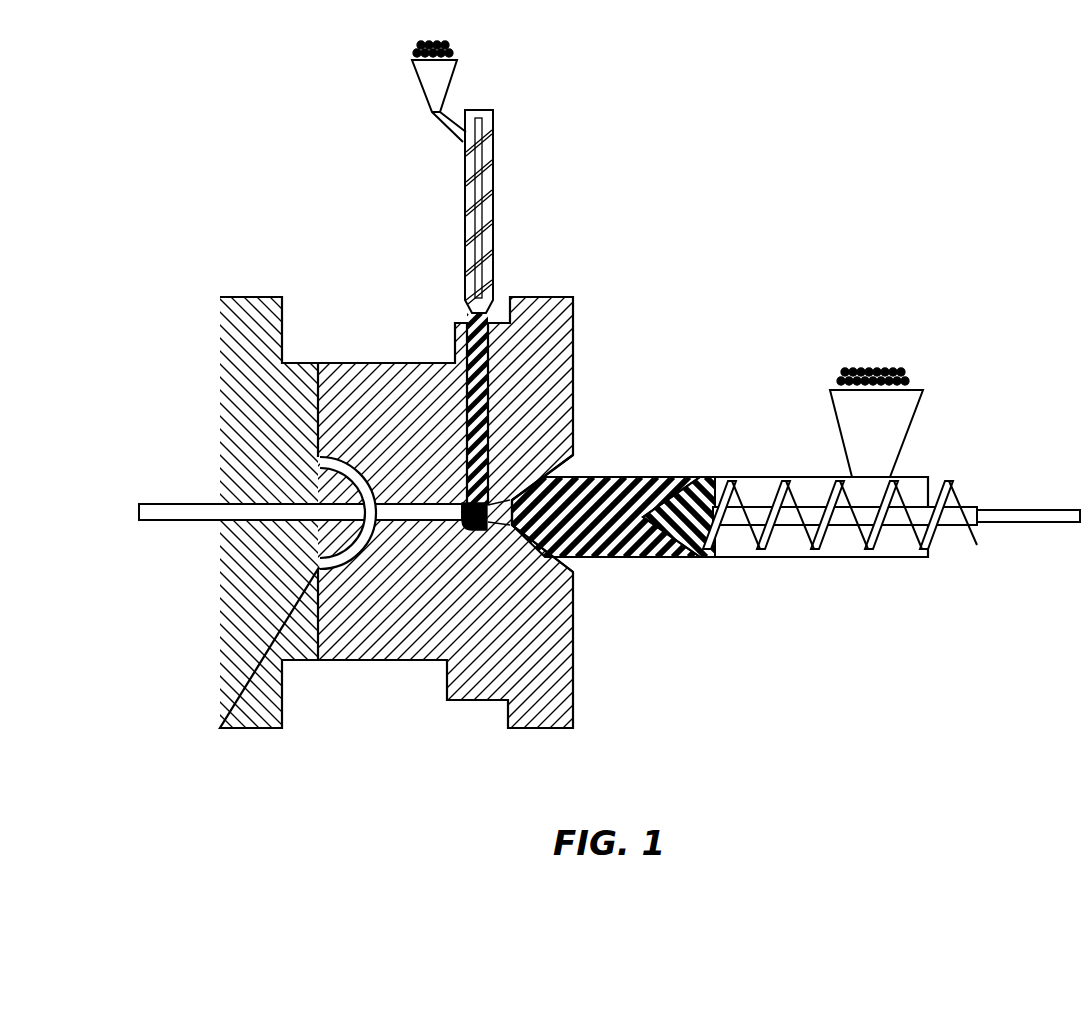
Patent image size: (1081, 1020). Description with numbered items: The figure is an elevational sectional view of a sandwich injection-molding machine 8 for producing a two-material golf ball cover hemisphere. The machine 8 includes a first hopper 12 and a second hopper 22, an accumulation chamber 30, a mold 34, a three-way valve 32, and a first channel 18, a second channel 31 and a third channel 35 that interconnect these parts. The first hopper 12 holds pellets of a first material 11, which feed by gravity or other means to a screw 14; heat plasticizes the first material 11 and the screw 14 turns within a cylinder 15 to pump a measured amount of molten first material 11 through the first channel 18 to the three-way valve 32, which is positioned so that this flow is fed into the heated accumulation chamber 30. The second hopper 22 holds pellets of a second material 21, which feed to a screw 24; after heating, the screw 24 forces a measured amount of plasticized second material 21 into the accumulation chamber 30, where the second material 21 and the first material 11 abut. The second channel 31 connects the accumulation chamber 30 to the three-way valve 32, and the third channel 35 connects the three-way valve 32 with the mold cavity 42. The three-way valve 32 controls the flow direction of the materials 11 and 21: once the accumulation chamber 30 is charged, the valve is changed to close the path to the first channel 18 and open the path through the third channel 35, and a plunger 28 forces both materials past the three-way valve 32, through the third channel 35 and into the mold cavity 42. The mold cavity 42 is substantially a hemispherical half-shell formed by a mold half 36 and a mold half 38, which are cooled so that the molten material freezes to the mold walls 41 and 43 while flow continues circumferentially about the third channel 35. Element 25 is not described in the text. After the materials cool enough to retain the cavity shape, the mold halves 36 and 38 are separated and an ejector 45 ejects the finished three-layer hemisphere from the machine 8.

The sandwich injection-molding machine 8 is at (540, 379).
The first material 11 is at (452, 48).
The first hopper 12 is at (418, 88).
The screw 14 is at (494, 138).
The cylinder 15 is at (494, 244).
The first channel 18 is at (497, 365).
The second material 21 is at (680, 478).
The second hopper 22 is at (918, 420).
The screw 24 is at (760, 496).
The screw shaft 25 is at (772, 540).
The plunger 28 is at (1027, 508).
The accumulation chamber 30 is at (668, 558).
The second channel 31 is at (490, 522).
The three-way valve 32 is at (520, 462).
The mold 34 is at (497, 491).
The third channel 35 is at (422, 520).
The mold half 36 is at (240, 390).
The mold half 38 is at (338, 660).
The mold wall 41 is at (368, 478).
The mold cavity 42 is at (342, 468).
The mold wall 43 is at (320, 470).
The ejector 45 is at (178, 521).